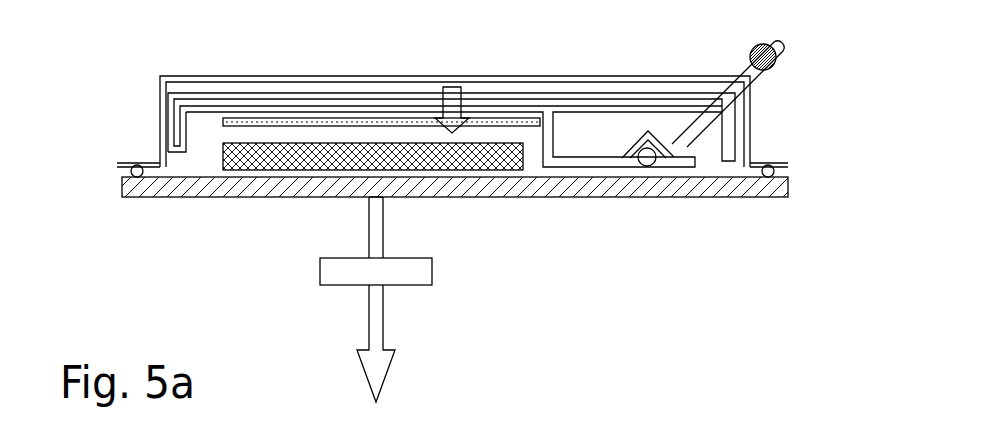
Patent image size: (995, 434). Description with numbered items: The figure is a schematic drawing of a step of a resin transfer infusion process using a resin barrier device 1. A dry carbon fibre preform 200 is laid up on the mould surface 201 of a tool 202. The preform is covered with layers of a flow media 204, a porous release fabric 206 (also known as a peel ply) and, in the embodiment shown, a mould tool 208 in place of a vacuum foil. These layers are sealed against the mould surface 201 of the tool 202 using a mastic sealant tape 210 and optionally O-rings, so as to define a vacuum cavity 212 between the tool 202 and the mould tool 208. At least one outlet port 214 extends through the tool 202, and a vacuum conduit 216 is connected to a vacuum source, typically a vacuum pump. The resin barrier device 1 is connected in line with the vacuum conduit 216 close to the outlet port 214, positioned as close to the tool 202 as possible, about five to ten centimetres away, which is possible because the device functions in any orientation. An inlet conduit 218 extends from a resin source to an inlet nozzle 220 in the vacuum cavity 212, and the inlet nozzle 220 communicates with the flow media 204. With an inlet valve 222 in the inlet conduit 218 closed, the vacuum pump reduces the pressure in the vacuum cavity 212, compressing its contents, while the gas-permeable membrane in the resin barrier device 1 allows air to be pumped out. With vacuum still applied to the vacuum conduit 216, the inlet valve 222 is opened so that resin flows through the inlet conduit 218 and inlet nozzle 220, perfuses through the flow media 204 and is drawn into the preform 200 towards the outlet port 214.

The resin barrier device 1 is at (434, 276).
The dry carbon fibre preform 200 is at (495, 156).
The mould surface 201 is at (188, 165).
The tool 202 is at (723, 188).
The flow media 204 is at (423, 118).
The porous release fabric 206 is at (202, 93).
The mould tool 208 is at (295, 77).
The mastic sealant tape 210 is at (135, 164).
The vacuum cavity 212 is at (597, 127).
The outlet port 214 is at (380, 199).
The vacuum conduit 216 is at (368, 226).
The inlet conduit 218 is at (747, 74).
The inlet nozzle 220 is at (677, 148).
The inlet valve 222 is at (777, 63).